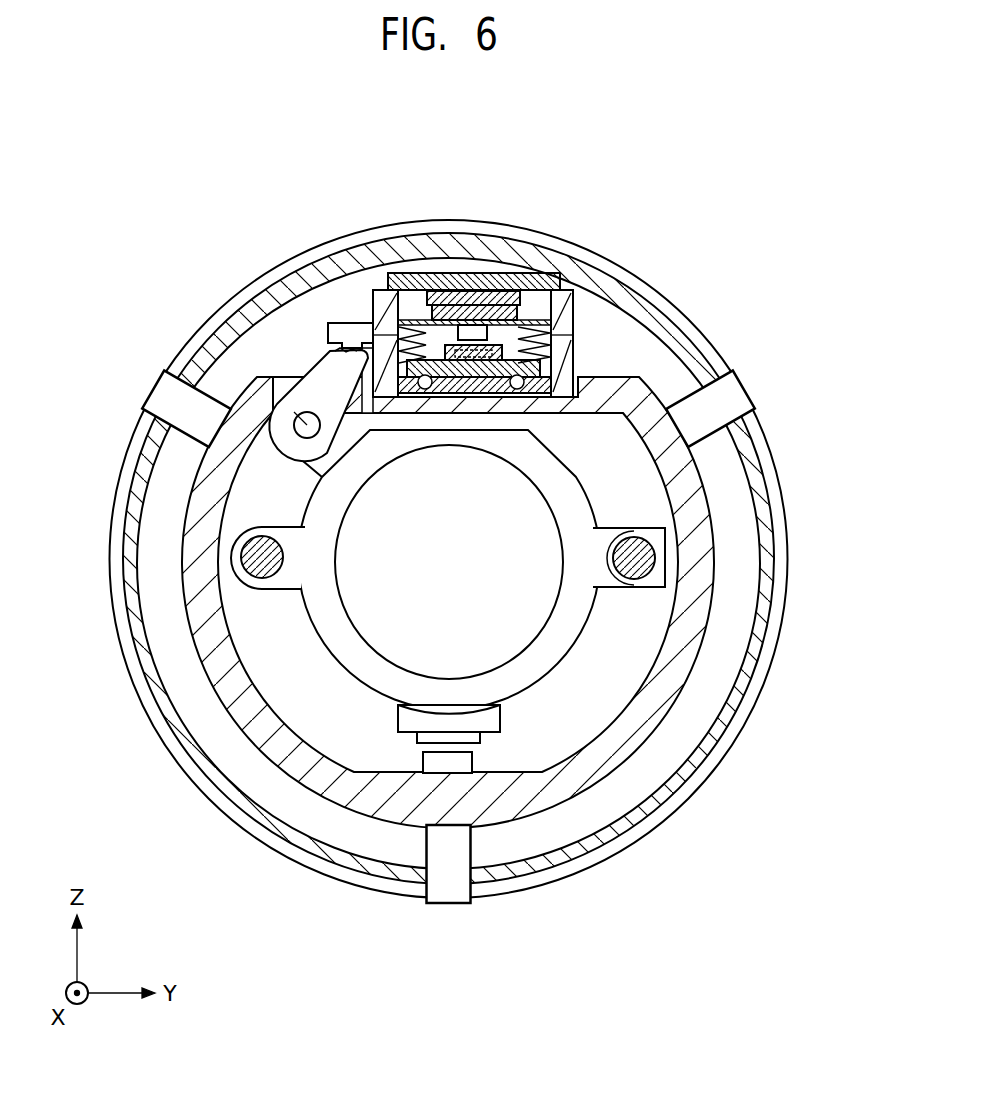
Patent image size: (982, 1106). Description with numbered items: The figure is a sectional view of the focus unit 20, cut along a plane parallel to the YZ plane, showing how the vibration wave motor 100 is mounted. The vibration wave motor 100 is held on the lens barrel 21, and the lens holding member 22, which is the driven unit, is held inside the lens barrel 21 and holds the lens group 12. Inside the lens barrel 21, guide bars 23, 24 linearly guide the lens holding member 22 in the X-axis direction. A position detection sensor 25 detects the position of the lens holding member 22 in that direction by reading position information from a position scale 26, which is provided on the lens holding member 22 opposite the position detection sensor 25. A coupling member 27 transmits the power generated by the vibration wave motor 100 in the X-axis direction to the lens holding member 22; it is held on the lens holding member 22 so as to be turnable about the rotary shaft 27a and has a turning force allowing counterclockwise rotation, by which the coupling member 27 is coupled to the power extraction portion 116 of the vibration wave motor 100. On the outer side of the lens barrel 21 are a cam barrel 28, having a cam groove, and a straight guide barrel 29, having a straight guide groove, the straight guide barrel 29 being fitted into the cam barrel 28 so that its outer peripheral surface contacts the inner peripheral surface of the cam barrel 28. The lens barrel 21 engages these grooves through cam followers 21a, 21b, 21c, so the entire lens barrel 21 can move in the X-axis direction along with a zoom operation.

The focus unit 20 is at (137, 187).
The vibration wave motor 100 is at (505, 292).
The power extraction portion 116 is at (328, 353).
The coupling member 27 is at (328, 373).
The rotary shaft 27a is at (243, 385).
The lens barrel 21 is at (258, 390).
The cam follower 21a is at (163, 400).
The cam follower 21b is at (745, 395).
The cam follower 21c is at (440, 882).
The cam barrel 28 is at (128, 453).
The straight guide barrel 29 is at (132, 488).
The lens holding member 22 is at (320, 497).
The lens group 12 is at (530, 495).
The guide bar 23 is at (263, 567).
The guide bar 24 is at (638, 567).
The position detection sensor 25 is at (432, 763).
The position scale 26 is at (468, 737).